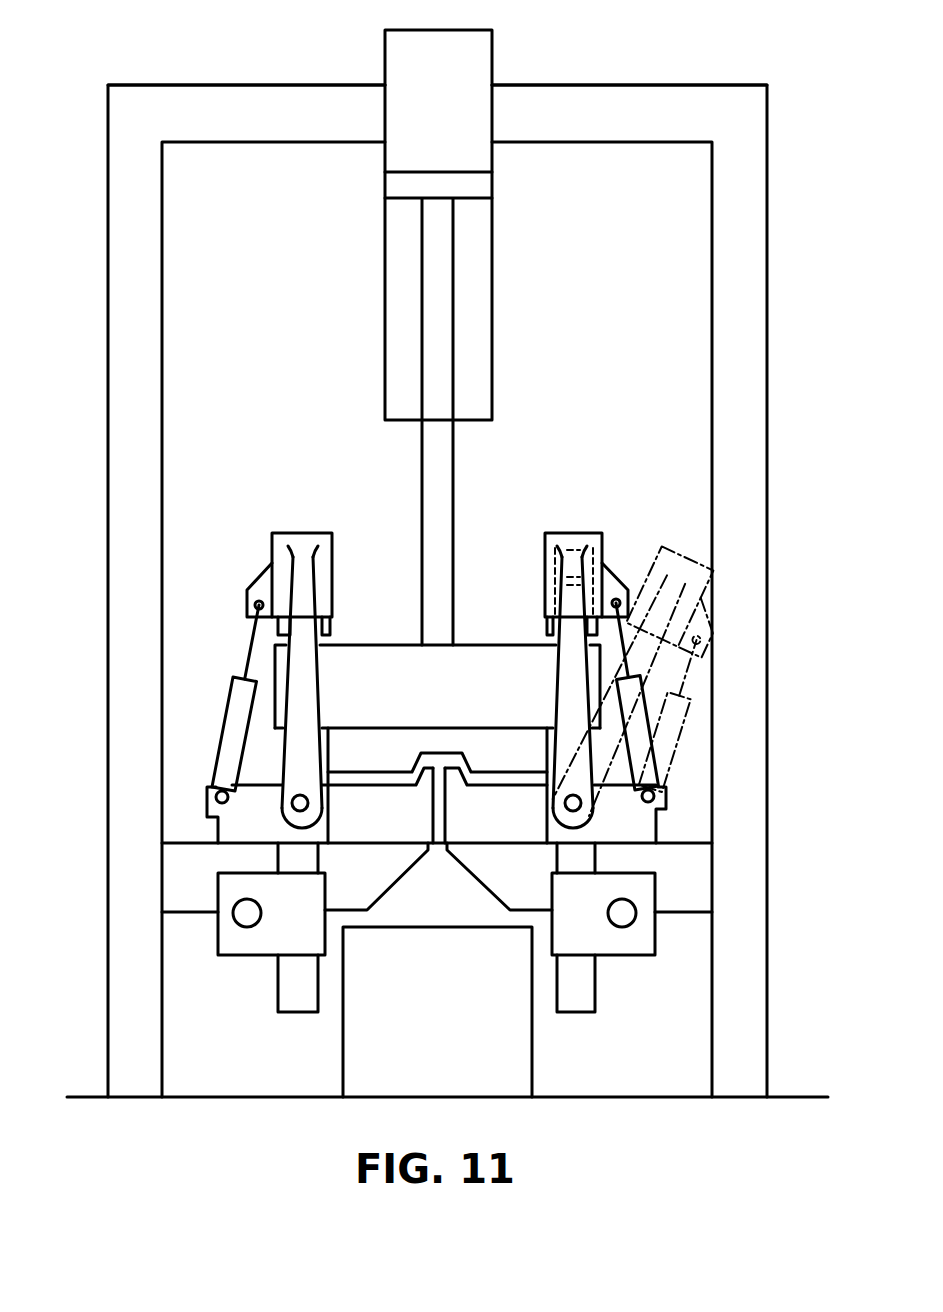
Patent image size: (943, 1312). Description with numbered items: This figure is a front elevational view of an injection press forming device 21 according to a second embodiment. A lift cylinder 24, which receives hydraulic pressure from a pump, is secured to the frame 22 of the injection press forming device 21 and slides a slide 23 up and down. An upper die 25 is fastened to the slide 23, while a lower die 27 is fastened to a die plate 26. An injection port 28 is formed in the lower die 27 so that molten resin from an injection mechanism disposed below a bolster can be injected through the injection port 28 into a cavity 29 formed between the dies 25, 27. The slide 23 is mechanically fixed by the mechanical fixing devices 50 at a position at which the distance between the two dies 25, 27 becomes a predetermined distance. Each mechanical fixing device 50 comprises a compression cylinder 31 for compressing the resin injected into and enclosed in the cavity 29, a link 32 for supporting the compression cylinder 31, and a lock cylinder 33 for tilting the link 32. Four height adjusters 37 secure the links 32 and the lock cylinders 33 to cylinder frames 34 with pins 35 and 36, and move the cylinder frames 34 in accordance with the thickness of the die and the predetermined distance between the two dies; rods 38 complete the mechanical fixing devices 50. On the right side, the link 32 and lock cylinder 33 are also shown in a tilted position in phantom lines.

The injection press forming device 21 is at (770, 198).
The frame 22 is at (750, 338).
The slide 23 is at (365, 656).
The lift cylinder 24 is at (470, 78).
The upper die 25 is at (410, 733).
The die plate 26 is at (373, 885).
The lower die 27 is at (473, 835).
The injection port 28 is at (443, 845).
The cavity 29 is at (441, 760).
The compression cylinder 31 is at (305, 532).
The link 32 is at (292, 637).
The lock cylinder 33 is at (232, 702).
The cylinder frame 34 is at (237, 837).
The pin 35 is at (215, 797).
The pin 36 is at (295, 805).
The height adjuster 37 is at (262, 938).
The rod 38 is at (293, 1002).
The mechanical fixing device 50 is at (570, 532).